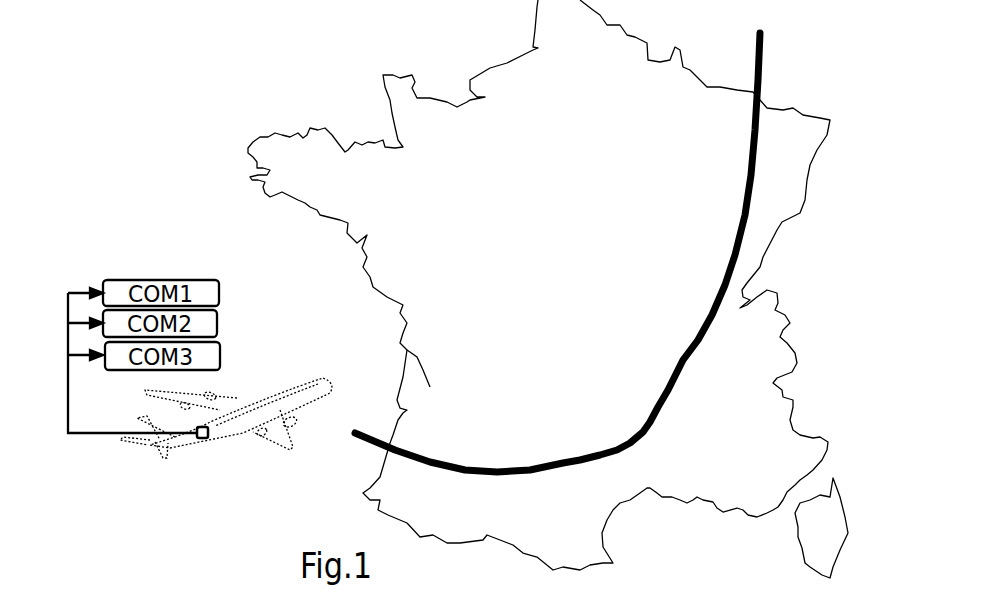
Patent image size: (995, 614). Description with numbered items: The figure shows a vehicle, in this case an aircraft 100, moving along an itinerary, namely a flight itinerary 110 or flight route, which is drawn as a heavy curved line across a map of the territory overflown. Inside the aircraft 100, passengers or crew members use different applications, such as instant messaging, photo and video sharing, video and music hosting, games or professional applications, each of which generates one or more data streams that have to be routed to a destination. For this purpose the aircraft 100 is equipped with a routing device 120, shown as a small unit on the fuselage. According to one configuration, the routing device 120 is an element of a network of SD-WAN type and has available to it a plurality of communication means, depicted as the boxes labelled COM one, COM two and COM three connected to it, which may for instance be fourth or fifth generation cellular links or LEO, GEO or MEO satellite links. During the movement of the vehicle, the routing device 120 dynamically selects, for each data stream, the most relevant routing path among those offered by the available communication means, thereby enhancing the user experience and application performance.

The aircraft 100 is at (258, 393).
The flight itinerary 110 is at (765, 63).
The routing device 120 is at (205, 438).